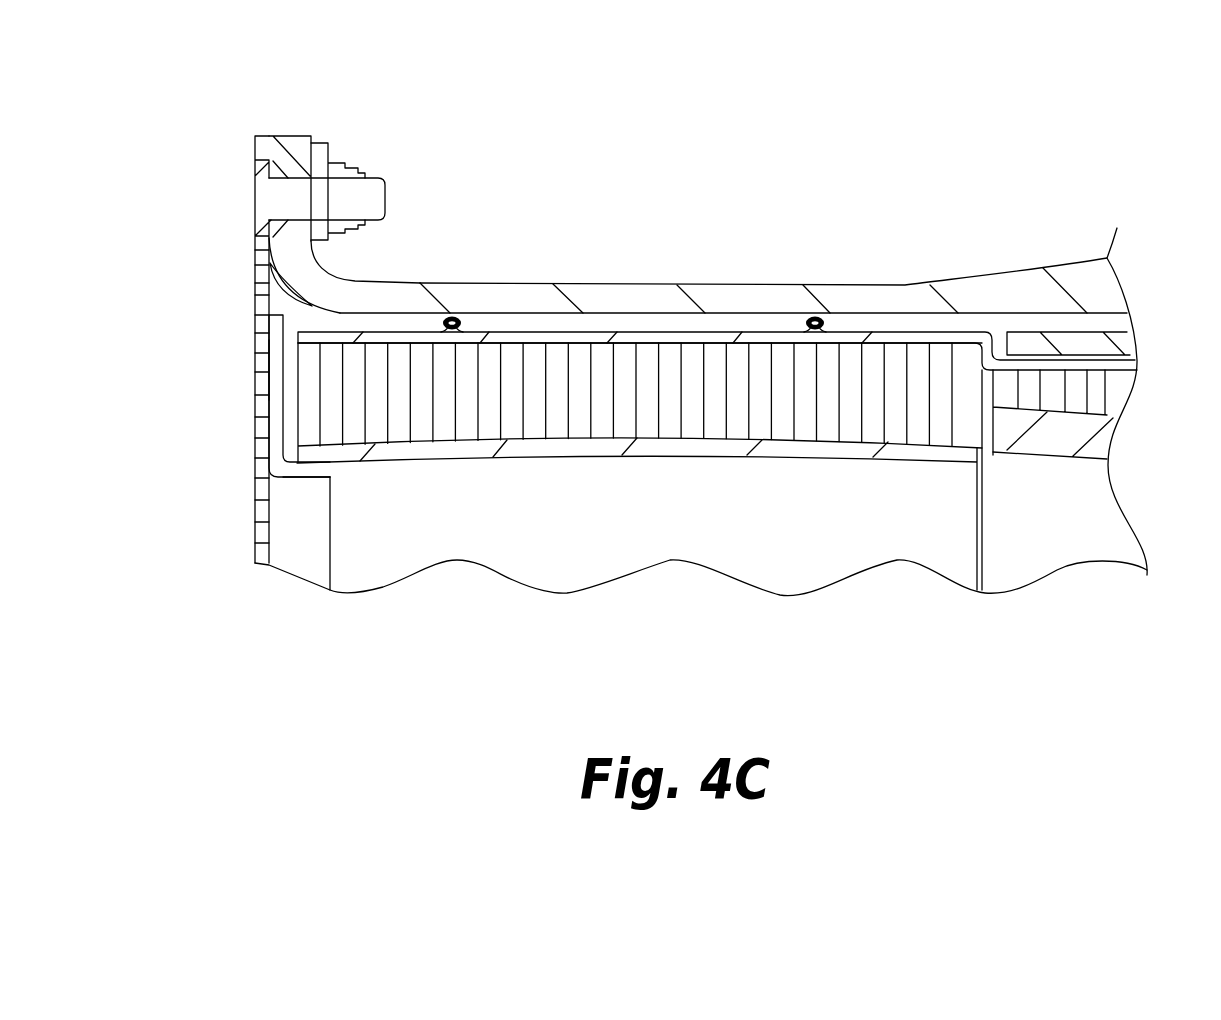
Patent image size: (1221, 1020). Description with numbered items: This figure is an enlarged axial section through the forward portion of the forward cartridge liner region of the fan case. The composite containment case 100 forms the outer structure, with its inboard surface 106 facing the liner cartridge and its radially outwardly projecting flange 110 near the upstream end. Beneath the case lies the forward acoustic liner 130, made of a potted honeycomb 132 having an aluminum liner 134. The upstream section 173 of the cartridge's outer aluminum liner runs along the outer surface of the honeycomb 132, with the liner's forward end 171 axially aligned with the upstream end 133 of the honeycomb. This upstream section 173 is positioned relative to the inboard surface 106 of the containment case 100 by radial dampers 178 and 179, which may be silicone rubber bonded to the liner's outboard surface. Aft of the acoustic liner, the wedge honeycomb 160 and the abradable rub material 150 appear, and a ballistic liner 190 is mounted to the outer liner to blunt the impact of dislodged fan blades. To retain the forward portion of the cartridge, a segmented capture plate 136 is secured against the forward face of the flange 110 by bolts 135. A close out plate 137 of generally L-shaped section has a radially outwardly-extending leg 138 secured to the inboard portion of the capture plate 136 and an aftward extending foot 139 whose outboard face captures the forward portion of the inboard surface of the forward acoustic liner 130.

The radially outwardly projecting flange 110 is at (291, 122).
The bolts 135 is at (255, 197).
The capture plate 136 is at (255, 252).
The forward end/rim of the liner 171 is at (297, 337).
The radially outwardly-extending leg 138 is at (268, 366).
The upstream end/rim of the honeycomb 133 is at (297, 403).
The close out plate 137 is at (274, 452).
The aftward extending foot 139 is at (302, 480).
The radial damper 178 is at (458, 316).
The inner/inboard surface 106 is at (603, 313).
The upstream section of the liner 173 is at (670, 330).
The radial damper 179 is at (808, 316).
The containment case 100 is at (983, 292).
The ballistic liner 190 is at (1062, 330).
The wedge honeycomb 160 is at (1098, 396).
The abradable rub material 150 is at (1053, 443).
The aluminum liner 134 is at (513, 463).
The forward acoustic liner 130 is at (590, 474).
The potted honeycomb 132 is at (805, 425).